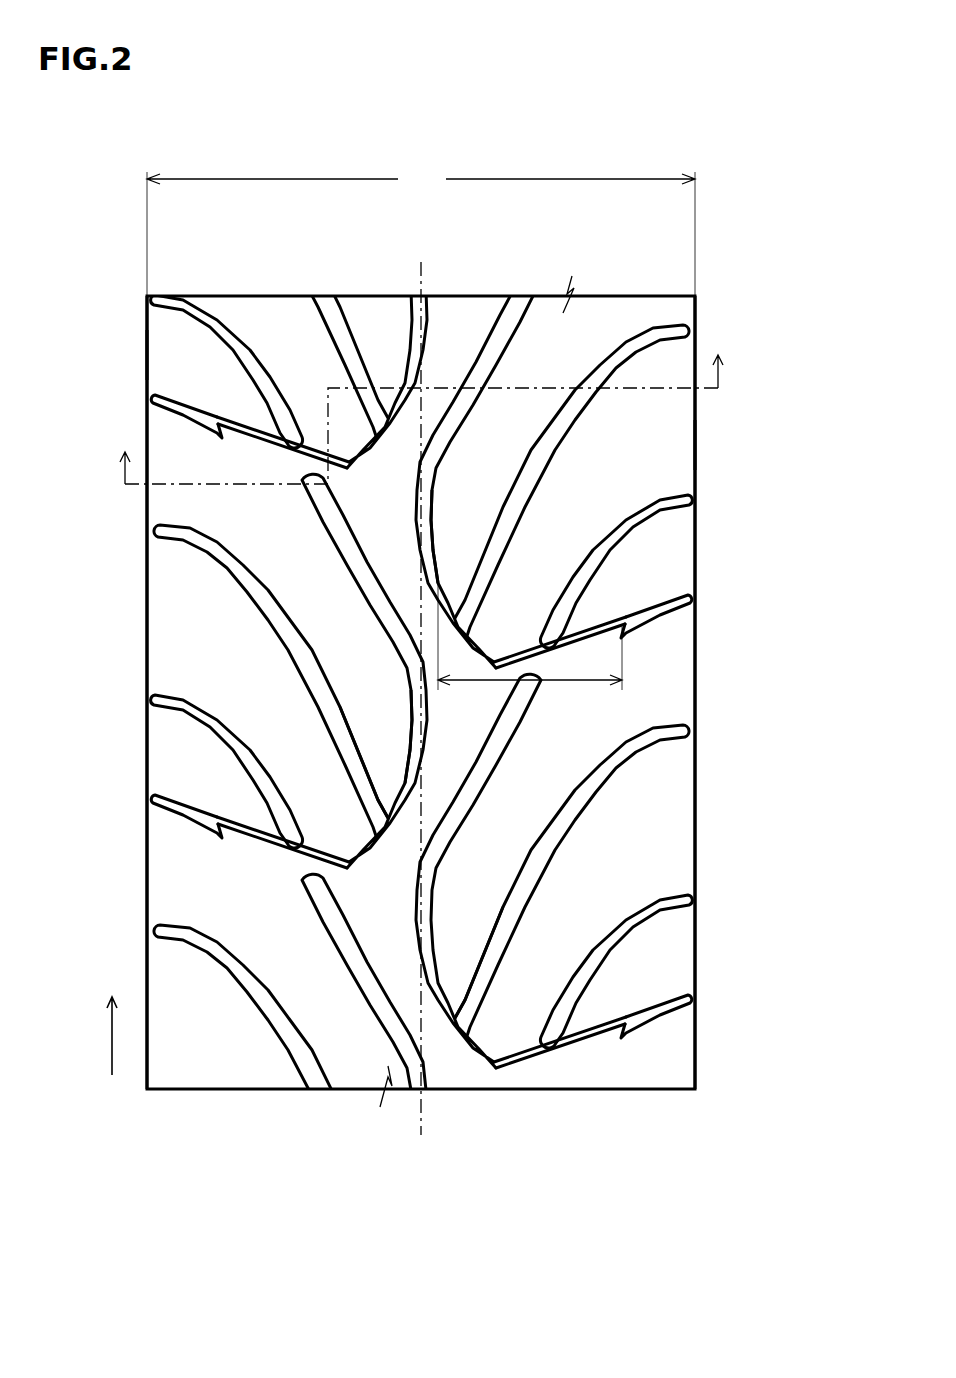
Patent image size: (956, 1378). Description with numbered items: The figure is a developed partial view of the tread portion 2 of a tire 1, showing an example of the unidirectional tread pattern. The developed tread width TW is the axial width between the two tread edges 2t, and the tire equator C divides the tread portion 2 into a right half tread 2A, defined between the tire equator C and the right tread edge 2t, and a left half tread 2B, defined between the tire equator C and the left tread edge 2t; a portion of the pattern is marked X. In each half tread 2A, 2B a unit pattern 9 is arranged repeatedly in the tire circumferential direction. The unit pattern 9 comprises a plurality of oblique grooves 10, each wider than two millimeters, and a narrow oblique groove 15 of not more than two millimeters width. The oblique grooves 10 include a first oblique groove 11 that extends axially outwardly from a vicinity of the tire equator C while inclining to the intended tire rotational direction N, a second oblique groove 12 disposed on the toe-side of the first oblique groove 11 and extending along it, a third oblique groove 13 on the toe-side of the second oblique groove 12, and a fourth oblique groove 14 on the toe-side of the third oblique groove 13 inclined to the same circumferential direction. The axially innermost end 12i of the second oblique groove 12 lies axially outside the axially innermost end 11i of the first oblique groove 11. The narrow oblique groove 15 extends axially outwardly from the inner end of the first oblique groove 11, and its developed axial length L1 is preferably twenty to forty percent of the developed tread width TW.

The motorcycle tire 1 is at (761, 213).
The tread portion 2 is at (706, 300).
The right half tread 2A is at (707, 315).
The left half tread 2B is at (122, 309).
The tread edge 2t is at (147, 356).
The unit pattern 9 is at (52, 658).
The oblique grooves 10 is at (104, 508).
The first oblique groove 11 is at (320, 505).
The second oblique groove 12 is at (250, 578).
The third oblique groove 13 is at (182, 711).
The fourth oblique groove 14 is at (177, 810).
The narrow oblique groove 15 is at (265, 850).
The axially innermost end of the first oblique groove 11i is at (437, 583).
The axially innermost end of the second oblique groove 12i is at (382, 835).
The developed axial length of the narrow oblique groove L1 is at (598, 648).
The developed tread width TW is at (421, 230).
The tire equator C is at (421, 684).
The section line X is at (422, 404).
The intended tire rotational direction N is at (112, 1033).